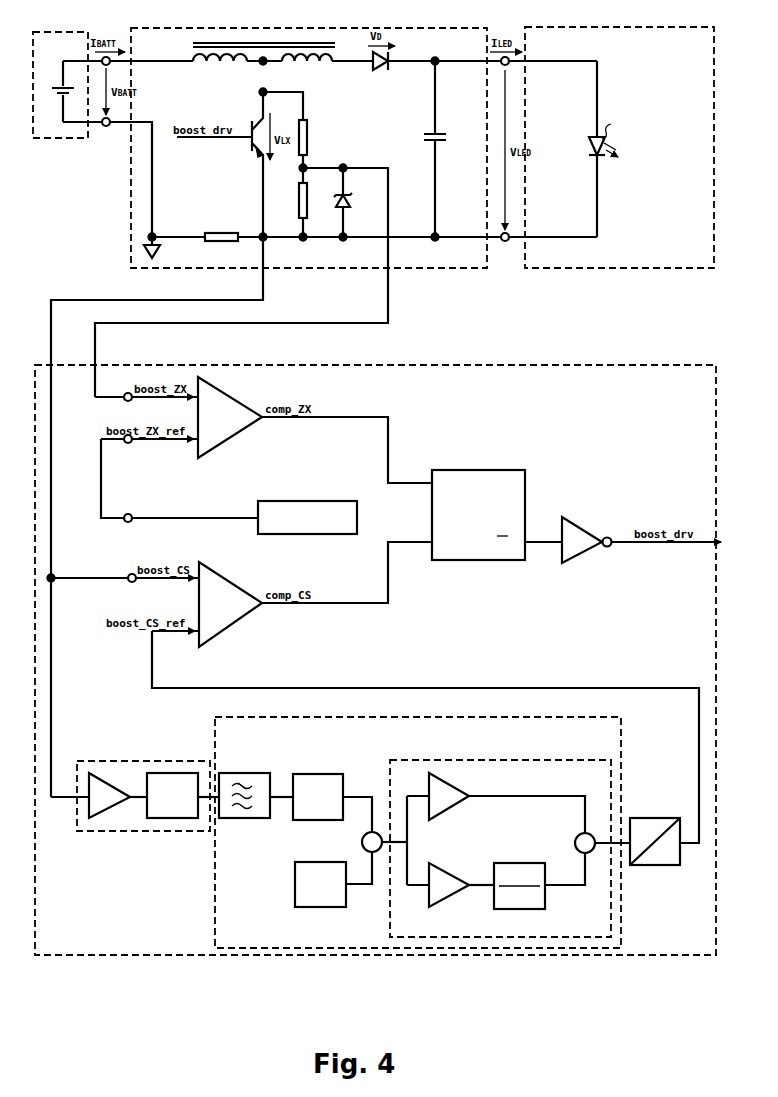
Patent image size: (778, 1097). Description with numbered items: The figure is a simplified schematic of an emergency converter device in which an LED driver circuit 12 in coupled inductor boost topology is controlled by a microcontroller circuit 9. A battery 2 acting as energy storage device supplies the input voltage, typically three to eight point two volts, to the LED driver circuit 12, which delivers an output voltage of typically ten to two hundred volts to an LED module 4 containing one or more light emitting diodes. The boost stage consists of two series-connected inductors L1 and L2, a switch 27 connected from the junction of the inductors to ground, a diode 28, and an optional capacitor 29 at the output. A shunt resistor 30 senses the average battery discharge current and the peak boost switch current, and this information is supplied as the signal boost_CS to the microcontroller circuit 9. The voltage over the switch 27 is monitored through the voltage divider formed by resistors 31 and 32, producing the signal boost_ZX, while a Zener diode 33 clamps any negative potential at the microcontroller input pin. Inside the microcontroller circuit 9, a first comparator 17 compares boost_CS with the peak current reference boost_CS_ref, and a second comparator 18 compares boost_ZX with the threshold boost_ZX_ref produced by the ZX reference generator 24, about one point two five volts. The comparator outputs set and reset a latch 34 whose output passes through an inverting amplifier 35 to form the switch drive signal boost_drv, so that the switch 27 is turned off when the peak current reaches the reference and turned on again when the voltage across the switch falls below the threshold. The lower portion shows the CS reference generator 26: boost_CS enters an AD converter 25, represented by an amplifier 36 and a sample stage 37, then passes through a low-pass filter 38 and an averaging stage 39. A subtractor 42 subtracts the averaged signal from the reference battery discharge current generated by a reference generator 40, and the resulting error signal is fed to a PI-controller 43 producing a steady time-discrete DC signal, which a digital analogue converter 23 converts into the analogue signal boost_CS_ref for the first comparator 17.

The battery 2 is at (55, 140).
The LED module 4 is at (612, 270).
The microcontroller circuit 9 is at (640, 365).
The LED driver circuit 12 is at (437, 270).
The inductor L1 is at (193, 63).
The inductor L2 is at (332, 63).
The first comparator 17 is at (238, 625).
The second comparator 18 is at (228, 443).
The digital analogue converter 23 is at (660, 868).
The ZX reference generator 24 is at (303, 500).
The AD converter 25 is at (195, 832).
The CS reference generator 26 is at (223, 950).
The switch 27 is at (249, 143).
The diode 28 is at (383, 72).
The capacitor 29 is at (440, 145).
The shunt resistor 30 is at (205, 233).
The resistor 31 is at (307, 136).
The resistor 32 is at (299, 203).
The Zener diode 33 is at (349, 199).
The latch 34 is at (478, 562).
The inverting amplifier 35 is at (580, 519).
The amplifier 36 is at (97, 818).
The sample stage 37 is at (160, 818).
The low-pass filter 38 is at (243, 820).
The averaging stage 39 is at (320, 773).
The reference generator 40 is at (295, 886).
The subtractor 42 is at (362, 842).
The PI-controller 43 is at (611, 775).